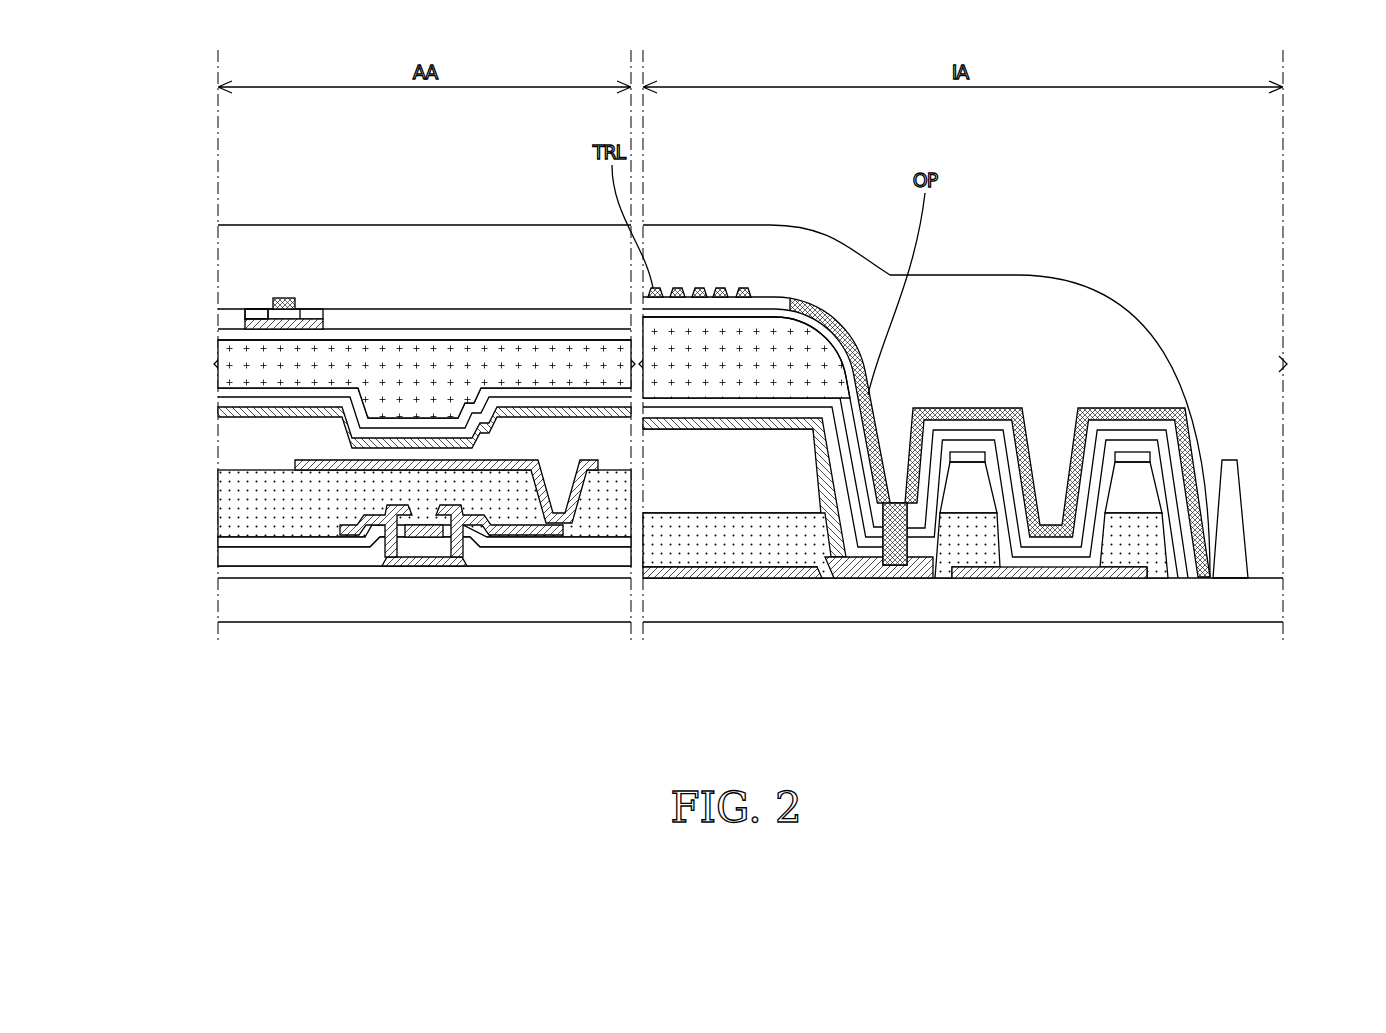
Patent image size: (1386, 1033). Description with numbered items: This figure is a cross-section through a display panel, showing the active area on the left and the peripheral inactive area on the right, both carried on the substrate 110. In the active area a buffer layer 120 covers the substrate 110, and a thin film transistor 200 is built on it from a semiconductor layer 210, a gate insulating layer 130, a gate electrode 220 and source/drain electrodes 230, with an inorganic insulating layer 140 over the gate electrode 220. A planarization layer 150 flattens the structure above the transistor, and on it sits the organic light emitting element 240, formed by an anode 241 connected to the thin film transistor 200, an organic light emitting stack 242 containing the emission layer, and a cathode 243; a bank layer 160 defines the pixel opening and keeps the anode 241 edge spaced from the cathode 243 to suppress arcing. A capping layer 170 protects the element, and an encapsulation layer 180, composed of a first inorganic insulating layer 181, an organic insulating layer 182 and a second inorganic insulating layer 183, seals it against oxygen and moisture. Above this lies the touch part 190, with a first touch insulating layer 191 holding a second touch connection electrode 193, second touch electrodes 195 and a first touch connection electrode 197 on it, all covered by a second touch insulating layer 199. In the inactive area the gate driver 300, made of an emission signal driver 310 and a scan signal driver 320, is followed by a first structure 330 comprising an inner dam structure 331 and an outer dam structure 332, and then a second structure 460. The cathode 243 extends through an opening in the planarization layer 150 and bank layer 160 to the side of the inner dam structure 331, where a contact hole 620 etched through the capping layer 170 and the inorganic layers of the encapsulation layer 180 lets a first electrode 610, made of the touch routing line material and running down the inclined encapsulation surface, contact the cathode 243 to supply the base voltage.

The substrate 110 is at (232, 600).
The buffer layer 120 is at (232, 572).
The gate insulating layer 130 is at (232, 553).
The inorganic insulating layer 140 is at (232, 540).
The planarization layer 150 is at (232, 507).
The bank layer 160 is at (232, 478).
The capping layer 170 is at (232, 396).
The encapsulation layer 180 is at (150, 330).
The first inorganic insulating layer 181 is at (232, 390).
The organic insulating layer 182 is at (232, 352).
The second inorganic insulating layer 183 is at (232, 332).
The touch part 190 is at (150, 187).
The first touch insulating layer 191 is at (232, 314).
The second touch connection electrode 193 is at (313, 326).
The second touch electrodes 195 is at (257, 313).
The first touch connection electrode 197 is at (283, 300).
The second touch insulating layer 199 is at (232, 272).
The thin film transistor 200 is at (365, 675).
The semiconductor layer 210 is at (422, 562).
The gate electrode 220 is at (440, 538).
The source/drain electrodes 230 is at (390, 553).
The organic light emitting element 240 is at (150, 408).
The anode 241 is at (300, 462).
The organic light emitting stack 242 is at (335, 450).
The cathode 243 is at (232, 410).
The gate driver 300 is at (918, 675).
The emission signal driver 310 is at (960, 572).
The scan signal driver 320 is at (797, 573).
The first structure 330 is at (1135, 200).
The (1-1)th structure 331 is at (968, 388).
The (1-2)th structure 332 is at (1128, 388).
The second structure 460 is at (1245, 562).
The first electrode 610 is at (893, 440).
The contact hole 620 is at (965, 573).